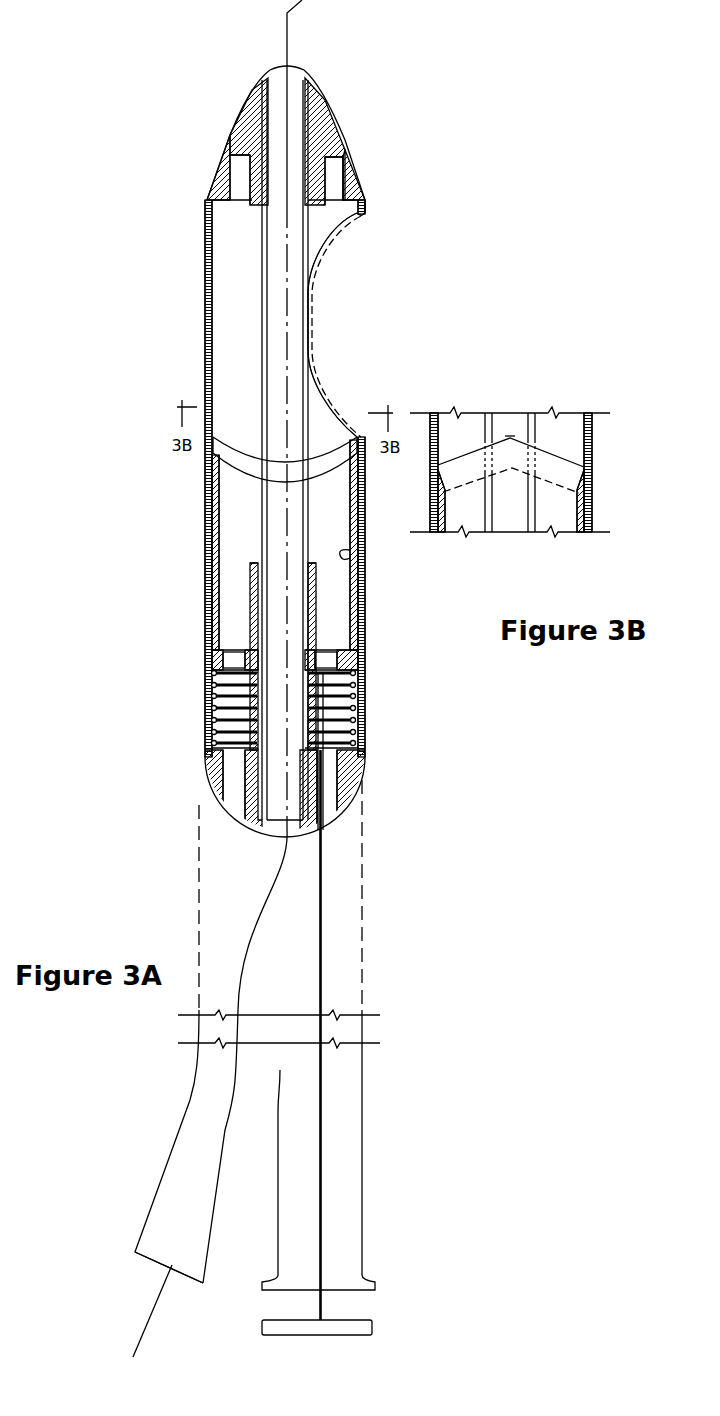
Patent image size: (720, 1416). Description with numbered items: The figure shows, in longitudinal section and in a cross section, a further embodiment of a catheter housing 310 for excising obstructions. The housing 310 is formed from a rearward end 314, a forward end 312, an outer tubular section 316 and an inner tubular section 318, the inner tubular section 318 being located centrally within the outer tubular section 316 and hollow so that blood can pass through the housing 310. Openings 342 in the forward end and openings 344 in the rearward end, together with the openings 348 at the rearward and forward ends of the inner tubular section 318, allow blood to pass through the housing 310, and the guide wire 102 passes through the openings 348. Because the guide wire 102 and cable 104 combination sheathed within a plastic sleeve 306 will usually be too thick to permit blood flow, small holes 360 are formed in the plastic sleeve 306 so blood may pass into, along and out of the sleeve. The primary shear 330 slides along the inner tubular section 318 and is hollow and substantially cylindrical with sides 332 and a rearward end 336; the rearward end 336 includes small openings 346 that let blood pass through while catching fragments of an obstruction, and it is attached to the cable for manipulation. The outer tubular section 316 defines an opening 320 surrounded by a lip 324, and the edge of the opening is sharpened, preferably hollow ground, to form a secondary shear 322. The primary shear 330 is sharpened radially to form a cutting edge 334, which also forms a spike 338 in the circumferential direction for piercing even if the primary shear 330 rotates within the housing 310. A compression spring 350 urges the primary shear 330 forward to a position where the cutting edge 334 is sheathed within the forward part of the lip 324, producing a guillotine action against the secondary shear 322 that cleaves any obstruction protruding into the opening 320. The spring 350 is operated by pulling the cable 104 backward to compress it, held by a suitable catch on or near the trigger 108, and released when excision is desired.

In FIG. 3A, the guide wire 102 is at (148, 1303).
In FIG. 3A, the cable 104 is at (322, 1197).
In FIG. 3A, the trigger 108 is at (373, 1328).
In FIG. 3A, the plastic sleeve 306 is at (343, 973).
In FIG. 3A, the housing 310 is at (205, 563).
In FIG. 3A, the forward end 312 is at (320, 86).
In FIG. 3A, the rearward end 314 is at (358, 783).
In FIG. 3A, the outer tubular section 316 is at (205, 355).
In FIG. 3B, the outer tubular section 316 is at (592, 483).
In FIG. 3A, the inner tubular section 318 is at (262, 317).
In FIG. 3B, the inner tubular section 318 is at (537, 532).
In FIG. 3A, the opening 320 is at (347, 323).
In FIG. 3A, the secondary shear 322 is at (360, 223).
In FIG. 3A, the lip 324 is at (362, 207).
In FIG. 3A, the primary shear 330 is at (210, 493).
In FIG. 3A, the sides 332 is at (353, 557).
In FIG. 3A, the cutting edge 334 is at (222, 437).
In FIG. 3B, the cutting edge 334 is at (468, 450).
In FIG. 3A, the rearward end 336 is at (203, 670).
In FIG. 3A, the spike 338 is at (356, 410).
In FIG. 3B, the spike 338 is at (510, 438).
In FIG. 3A, the openings 342 is at (330, 128).
In FIG. 3A, the openings 344 is at (425, 862).
In FIG. 3A, the small openings 346 is at (430, 641).
In FIG. 3A, the openings 348 is at (290, 866).
In FIG. 3A, the compression spring 350 is at (360, 717).
In FIG. 3A, the small holes 360 is at (425, 937).